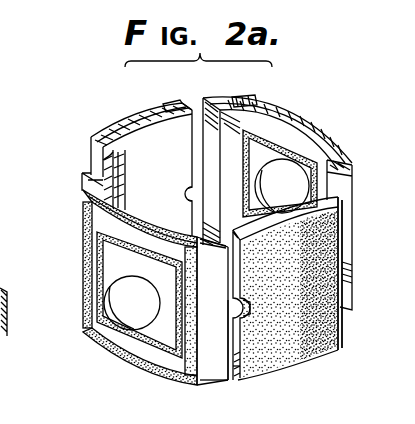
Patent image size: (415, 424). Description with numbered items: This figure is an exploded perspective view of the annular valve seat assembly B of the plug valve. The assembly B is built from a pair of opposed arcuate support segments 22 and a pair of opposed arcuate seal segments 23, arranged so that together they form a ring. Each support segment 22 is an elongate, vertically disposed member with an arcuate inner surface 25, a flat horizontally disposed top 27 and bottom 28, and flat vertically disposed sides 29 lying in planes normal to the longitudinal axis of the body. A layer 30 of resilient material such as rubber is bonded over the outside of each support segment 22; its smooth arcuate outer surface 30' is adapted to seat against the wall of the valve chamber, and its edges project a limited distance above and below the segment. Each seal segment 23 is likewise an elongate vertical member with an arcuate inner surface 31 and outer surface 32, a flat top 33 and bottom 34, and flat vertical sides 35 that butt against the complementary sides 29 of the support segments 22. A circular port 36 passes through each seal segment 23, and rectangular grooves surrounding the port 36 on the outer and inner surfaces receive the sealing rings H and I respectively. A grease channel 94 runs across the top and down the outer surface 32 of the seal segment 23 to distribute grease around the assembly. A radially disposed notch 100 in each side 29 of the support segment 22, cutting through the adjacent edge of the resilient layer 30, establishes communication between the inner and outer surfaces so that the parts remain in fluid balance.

The support segment 22 is at (341, 194).
The seal segment 23 is at (252, 105).
The inner surface 25 is at (135, 136).
The top 27 is at (167, 114).
The bottom 28 is at (234, 374).
The side 29 is at (103, 165).
The layer of resilient material 30 is at (259, 226).
The outer surface of layer 30' is at (320, 294).
The inner surface 31 is at (298, 118).
The outer surface 32 is at (90, 201).
The top 33 is at (344, 141).
The bottom 34 is at (200, 386).
The side 35 is at (214, 101).
The port 36 is at (132, 318).
The grease channel 94 is at (84, 178).
The notch 100 is at (187, 191).
The valve seat assembly B is at (82, 134).
The sealing ring H is at (84, 277).
The sealing ring I is at (235, 194).